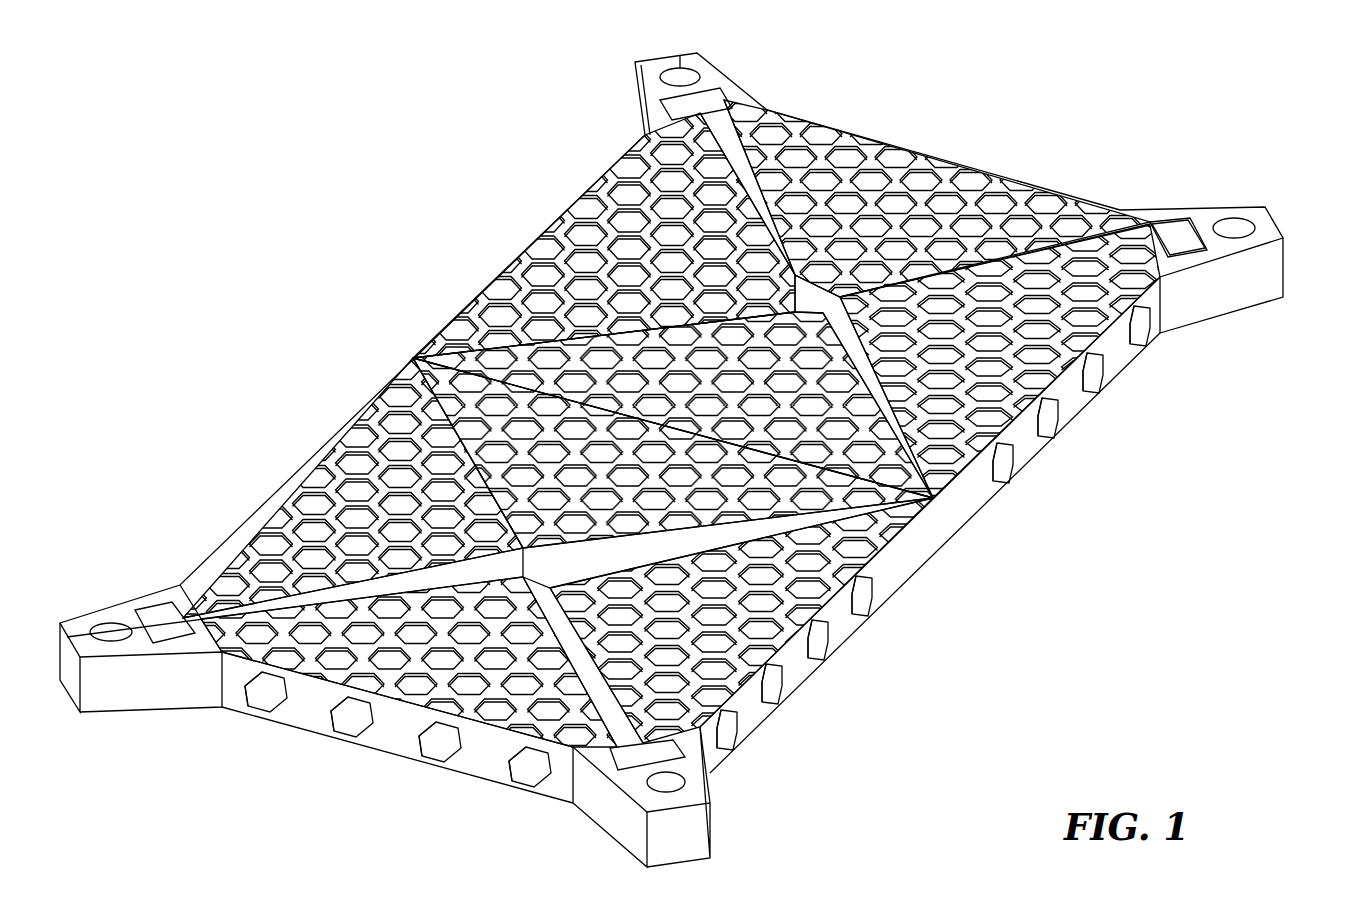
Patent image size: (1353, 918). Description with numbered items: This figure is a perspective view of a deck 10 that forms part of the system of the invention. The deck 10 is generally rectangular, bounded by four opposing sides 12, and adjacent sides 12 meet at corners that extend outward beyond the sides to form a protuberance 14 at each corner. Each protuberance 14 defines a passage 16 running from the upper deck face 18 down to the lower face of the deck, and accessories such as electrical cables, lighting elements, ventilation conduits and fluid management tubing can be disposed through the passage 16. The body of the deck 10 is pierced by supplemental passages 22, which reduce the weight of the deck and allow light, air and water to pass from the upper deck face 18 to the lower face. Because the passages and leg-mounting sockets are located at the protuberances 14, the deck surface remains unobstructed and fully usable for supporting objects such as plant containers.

The deck 10 is at (978, 542).
The side 12 is at (956, 158).
The protuberance 14 is at (640, 92).
The passage 16 is at (1178, 245).
The upper deck face 18 is at (840, 165).
The supplemental passage 22 is at (592, 265).